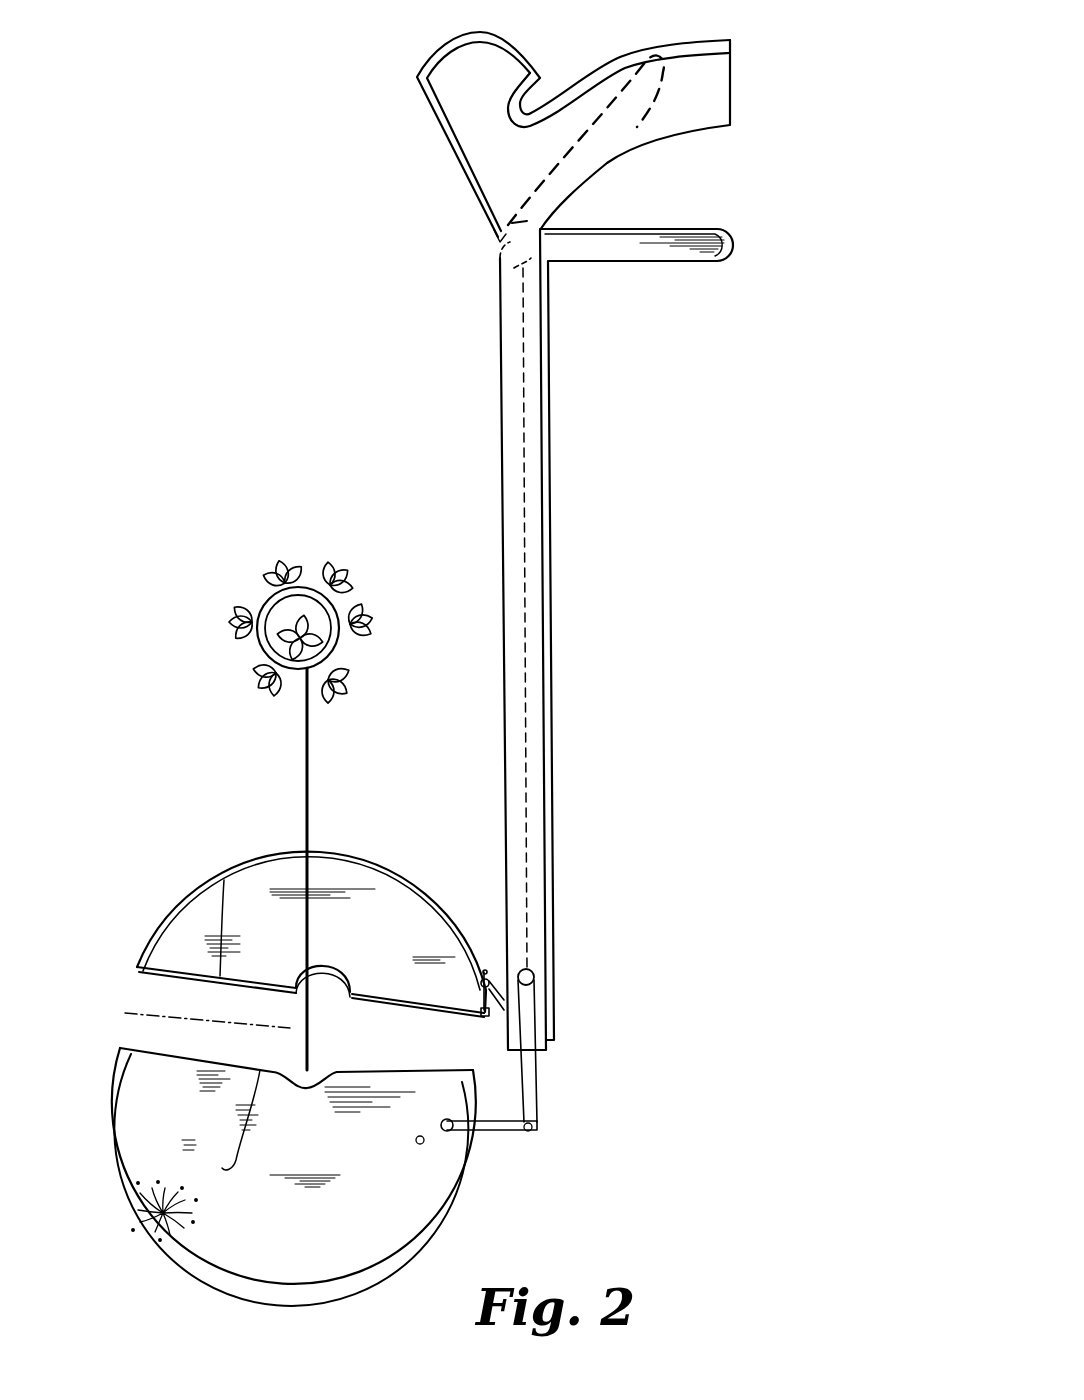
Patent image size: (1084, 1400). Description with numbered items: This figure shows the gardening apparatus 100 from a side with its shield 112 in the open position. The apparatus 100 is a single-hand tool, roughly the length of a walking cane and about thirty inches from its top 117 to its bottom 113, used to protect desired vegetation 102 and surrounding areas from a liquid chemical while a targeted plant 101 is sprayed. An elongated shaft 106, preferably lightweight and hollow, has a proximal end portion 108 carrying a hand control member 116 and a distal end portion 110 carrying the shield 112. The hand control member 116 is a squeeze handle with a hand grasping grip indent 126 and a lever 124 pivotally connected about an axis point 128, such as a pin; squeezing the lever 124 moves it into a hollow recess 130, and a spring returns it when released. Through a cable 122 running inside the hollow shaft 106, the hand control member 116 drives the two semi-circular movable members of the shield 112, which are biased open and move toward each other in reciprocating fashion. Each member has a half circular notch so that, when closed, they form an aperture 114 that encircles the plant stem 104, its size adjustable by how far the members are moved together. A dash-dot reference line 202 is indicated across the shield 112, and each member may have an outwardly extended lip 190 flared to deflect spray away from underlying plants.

The gardening apparatus 100 is at (340, 50).
The targeted plant 101 is at (256, 548).
The desired vegetation 102 is at (168, 1222).
The plant stem 104 is at (308, 763).
The elongated shaft 106 is at (549, 460).
The proximal end portion 108 is at (768, 30).
The distal end portion 110 is at (763, 827).
The shield 112 is at (362, 816).
The bottom 113 is at (297, 1197).
The aperture 114 is at (313, 1083).
The hand control member 116 is at (699, 316).
The top 117 is at (633, 50).
The cable 122 is at (523, 592).
The lever 124 is at (582, 260).
The hand grasping grip indent 126 is at (537, 103).
The axis point 128 is at (517, 245).
The hollow recess 130 is at (640, 127).
The outwardly extended lip 190 is at (373, 1167).
The pivot axis 202 is at (183, 1010).